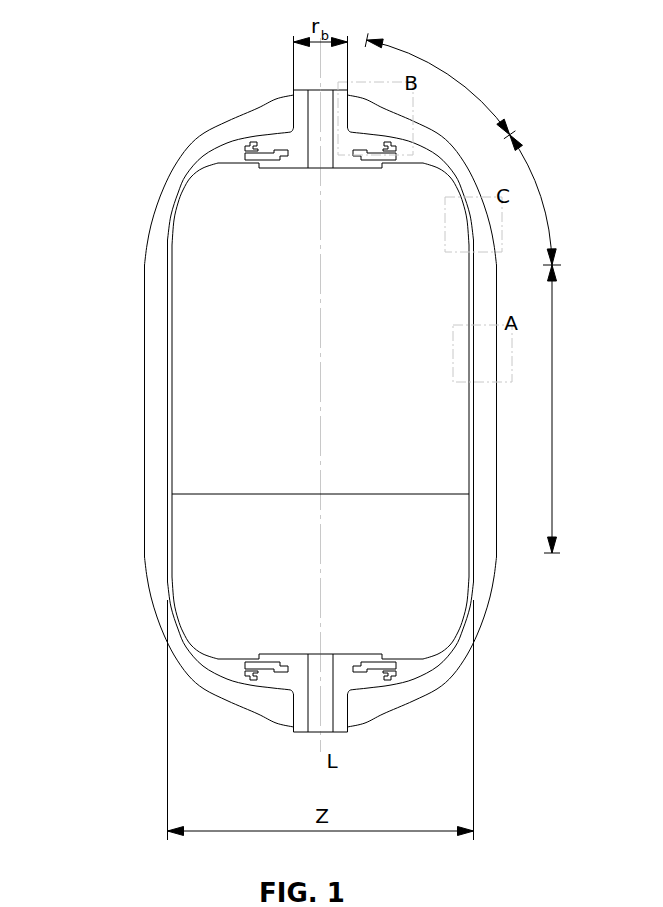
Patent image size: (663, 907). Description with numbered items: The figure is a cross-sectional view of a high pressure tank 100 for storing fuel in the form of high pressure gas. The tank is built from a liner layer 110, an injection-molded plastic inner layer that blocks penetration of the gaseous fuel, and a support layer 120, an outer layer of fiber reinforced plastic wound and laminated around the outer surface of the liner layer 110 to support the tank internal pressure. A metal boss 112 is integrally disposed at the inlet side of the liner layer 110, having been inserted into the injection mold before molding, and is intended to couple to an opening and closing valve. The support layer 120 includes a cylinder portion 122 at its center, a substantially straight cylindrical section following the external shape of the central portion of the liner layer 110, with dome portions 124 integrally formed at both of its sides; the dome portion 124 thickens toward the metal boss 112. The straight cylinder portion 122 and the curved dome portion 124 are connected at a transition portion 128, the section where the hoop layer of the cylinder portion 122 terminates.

The high pressure tank 100 is at (86, 49).
The liner layer 110 is at (168, 308).
The metal boss 112 is at (306, 95).
The support layer 120 is at (144, 400).
The cylinder portion 122 is at (567, 409).
The dome portion 124 is at (437, 84).
The transition portion 128 is at (541, 198).